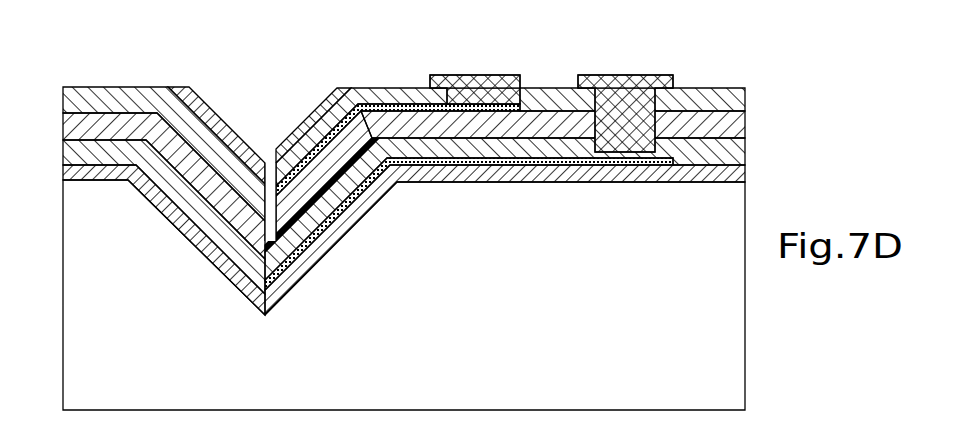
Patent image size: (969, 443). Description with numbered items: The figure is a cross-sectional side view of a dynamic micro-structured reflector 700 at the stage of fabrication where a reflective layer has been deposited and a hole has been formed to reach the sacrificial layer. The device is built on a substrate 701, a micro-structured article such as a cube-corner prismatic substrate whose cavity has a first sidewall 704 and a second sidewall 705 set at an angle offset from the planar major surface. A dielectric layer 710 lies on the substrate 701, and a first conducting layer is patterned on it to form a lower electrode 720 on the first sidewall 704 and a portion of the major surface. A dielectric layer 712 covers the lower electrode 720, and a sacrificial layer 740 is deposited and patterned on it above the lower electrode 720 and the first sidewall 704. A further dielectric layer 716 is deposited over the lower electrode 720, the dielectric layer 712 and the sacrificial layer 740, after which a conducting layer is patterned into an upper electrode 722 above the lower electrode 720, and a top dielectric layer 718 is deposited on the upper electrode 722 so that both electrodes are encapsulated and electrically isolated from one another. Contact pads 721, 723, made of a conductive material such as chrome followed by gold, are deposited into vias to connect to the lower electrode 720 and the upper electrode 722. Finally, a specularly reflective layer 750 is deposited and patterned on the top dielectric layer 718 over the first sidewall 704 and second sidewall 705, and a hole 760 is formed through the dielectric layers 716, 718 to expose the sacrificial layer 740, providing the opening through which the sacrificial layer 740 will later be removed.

The dynamic micro-structured reflector 700 is at (258, 72).
The substrate 701 is at (588, 350).
The first sidewall 704 is at (283, 292).
The second sidewall 705 is at (190, 243).
The dielectric layer 710 is at (288, 260).
The dielectric layer 712 is at (340, 172).
The dielectric layer 716 is at (100, 122).
The dielectric layer 718 is at (152, 100).
The lower electrode 720 is at (305, 225).
The contact pad 721 is at (625, 75).
The upper electrode 722 is at (388, 87).
The contact pad 723 is at (490, 75).
The sacrificial layer 740 is at (372, 188).
The reflective layer 750 is at (204, 112).
The hole 760 is at (273, 182).